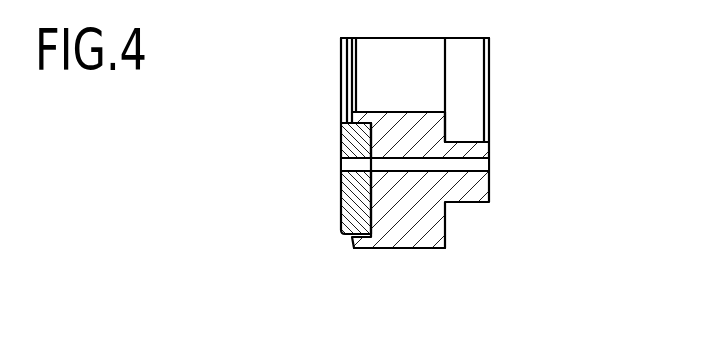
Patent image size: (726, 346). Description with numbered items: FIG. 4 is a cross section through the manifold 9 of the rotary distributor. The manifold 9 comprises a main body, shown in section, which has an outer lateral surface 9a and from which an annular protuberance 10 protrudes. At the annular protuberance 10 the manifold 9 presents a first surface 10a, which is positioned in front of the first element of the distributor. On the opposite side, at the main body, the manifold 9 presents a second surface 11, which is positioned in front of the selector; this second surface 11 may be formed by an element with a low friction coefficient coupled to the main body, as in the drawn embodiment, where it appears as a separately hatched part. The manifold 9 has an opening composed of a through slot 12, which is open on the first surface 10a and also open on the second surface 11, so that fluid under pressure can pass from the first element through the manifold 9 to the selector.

The manifold 9 is at (370, 259).
The outer lateral surface 9a is at (428, 259).
The annular protuberance 10 is at (472, 190).
The first surface 10a is at (499, 142).
The second surface 11 is at (334, 204).
The through slot 12 is at (479, 167).